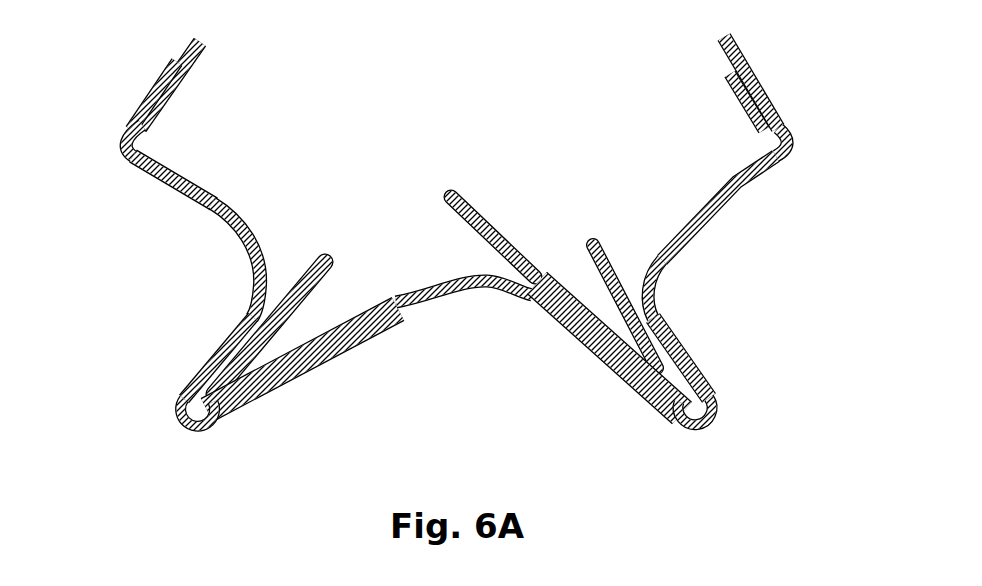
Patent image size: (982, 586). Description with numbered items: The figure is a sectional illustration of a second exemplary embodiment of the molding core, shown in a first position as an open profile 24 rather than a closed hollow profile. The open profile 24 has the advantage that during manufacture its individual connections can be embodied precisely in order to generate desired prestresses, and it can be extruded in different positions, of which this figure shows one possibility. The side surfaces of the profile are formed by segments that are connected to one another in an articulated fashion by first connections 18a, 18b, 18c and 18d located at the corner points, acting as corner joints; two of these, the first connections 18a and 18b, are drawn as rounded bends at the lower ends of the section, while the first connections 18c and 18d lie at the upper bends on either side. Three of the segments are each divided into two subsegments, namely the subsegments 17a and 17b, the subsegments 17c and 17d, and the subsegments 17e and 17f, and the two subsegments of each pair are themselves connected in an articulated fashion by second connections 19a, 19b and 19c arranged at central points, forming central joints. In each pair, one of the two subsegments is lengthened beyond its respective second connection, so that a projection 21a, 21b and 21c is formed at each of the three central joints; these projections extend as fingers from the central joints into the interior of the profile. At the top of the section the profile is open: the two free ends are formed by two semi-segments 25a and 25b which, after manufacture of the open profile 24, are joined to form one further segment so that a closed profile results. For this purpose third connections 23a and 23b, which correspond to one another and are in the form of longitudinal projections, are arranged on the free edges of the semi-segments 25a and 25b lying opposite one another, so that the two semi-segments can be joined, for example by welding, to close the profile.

The open profile 24 is at (527, 107).
The third connection 23a is at (722, 47).
The third connection 23b is at (197, 57).
The semi-segment 25a is at (172, 98).
The semi-segment 25b is at (727, 97).
The first connection 18a is at (177, 420).
The first connection 18b is at (710, 427).
The first connection 18c is at (787, 147).
The first connection 18d is at (120, 140).
The subsegment 17a is at (340, 353).
The subsegment 17b is at (580, 335).
The subsegment 17c is at (687, 357).
The subsegment 17d is at (737, 190).
The subsegment 17e is at (167, 193).
The subsegment 17f is at (210, 350).
The second connection 19a is at (487, 286).
The second connection 19b is at (660, 268).
The second connection 19c is at (253, 277).
The projection 21a is at (468, 182).
The projection 21b is at (590, 242).
The projection 21c is at (327, 257).